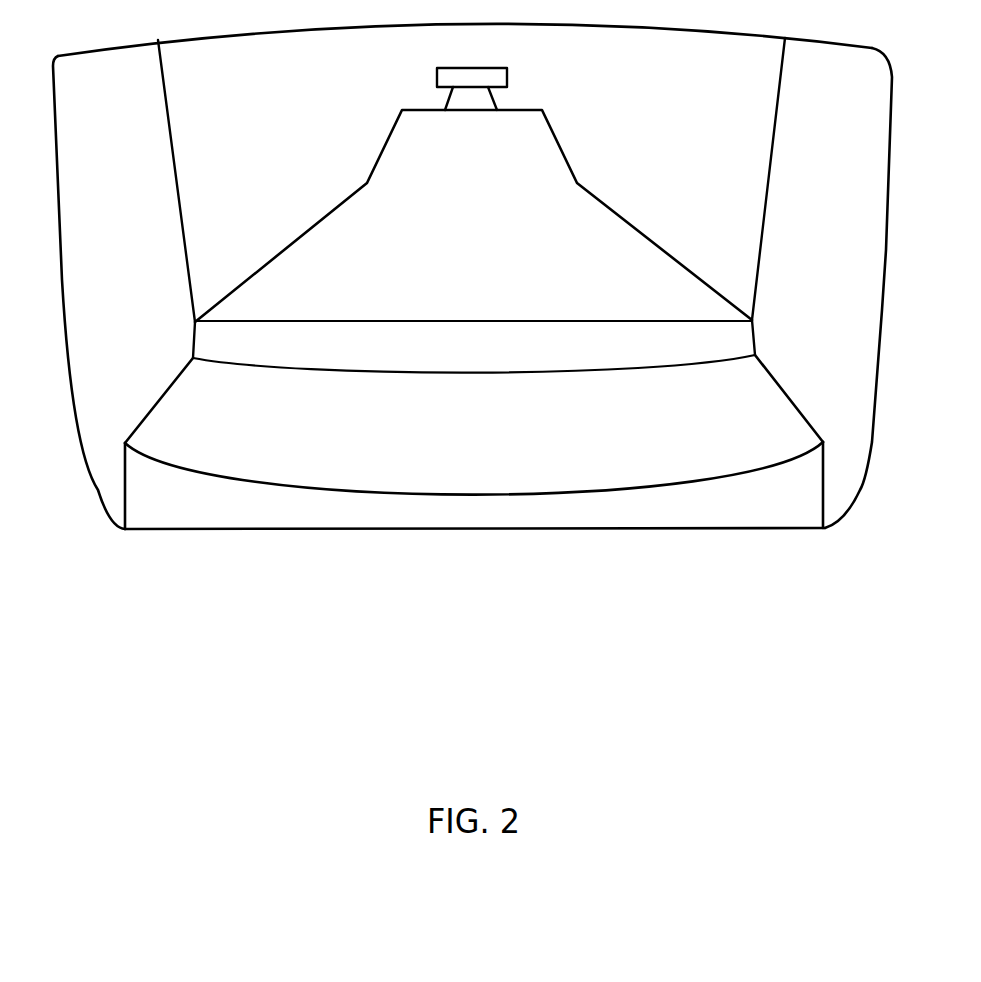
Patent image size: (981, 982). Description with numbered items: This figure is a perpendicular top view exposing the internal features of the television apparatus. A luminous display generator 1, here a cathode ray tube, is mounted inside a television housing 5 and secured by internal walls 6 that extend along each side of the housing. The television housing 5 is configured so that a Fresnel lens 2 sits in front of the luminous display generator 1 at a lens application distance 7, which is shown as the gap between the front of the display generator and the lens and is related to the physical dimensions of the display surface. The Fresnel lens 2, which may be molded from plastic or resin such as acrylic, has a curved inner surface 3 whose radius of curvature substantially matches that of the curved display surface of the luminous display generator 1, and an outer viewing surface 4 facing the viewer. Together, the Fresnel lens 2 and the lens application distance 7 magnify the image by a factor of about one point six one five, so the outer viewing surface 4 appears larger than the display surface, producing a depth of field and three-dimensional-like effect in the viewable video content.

The luminous display generator 1 is at (473, 195).
The Fresnel lens 2 is at (474, 485).
The curved inner surface 3 is at (657, 362).
The outer viewing surface 4 is at (483, 529).
The television housing 5 is at (472, 276).
The internal walls 6 is at (178, 218).
The lens application distance 7 is at (473, 494).